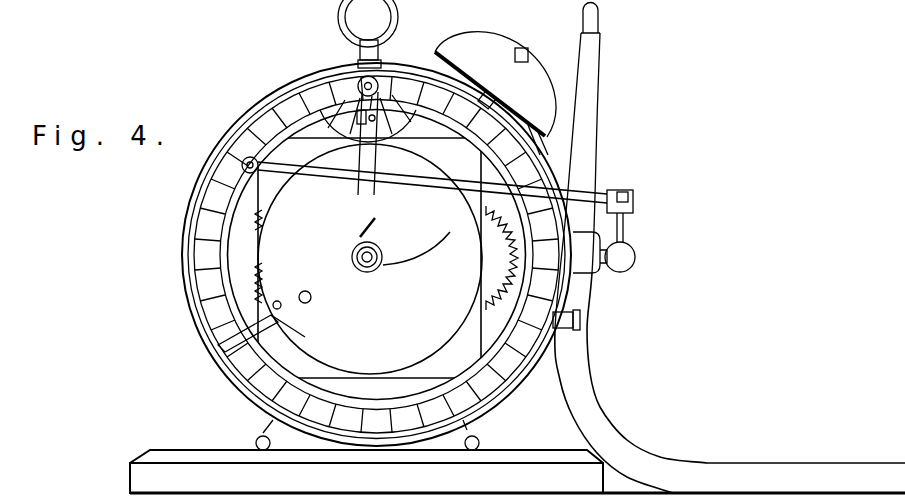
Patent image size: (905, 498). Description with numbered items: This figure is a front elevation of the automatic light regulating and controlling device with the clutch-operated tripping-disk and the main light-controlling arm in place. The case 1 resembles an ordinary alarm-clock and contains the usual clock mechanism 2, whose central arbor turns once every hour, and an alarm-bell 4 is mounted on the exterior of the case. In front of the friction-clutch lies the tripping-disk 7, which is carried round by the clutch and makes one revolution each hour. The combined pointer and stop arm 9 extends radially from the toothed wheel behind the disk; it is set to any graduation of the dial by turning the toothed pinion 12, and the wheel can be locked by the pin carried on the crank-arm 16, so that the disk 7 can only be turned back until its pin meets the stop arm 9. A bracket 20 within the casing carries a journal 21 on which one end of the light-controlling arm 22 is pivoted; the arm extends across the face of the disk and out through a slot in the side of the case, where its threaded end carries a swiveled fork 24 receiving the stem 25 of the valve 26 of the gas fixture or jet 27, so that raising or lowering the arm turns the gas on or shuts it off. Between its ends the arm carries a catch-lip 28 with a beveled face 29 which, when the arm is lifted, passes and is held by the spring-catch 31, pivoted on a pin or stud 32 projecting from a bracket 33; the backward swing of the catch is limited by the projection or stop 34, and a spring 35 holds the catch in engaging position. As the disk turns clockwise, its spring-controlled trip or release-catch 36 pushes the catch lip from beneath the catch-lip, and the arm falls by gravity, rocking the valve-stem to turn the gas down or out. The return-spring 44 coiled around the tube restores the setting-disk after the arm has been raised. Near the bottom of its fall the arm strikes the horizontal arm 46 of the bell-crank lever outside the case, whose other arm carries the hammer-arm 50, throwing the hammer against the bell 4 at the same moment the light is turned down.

The case 1 is at (186, 245).
The clock mechanism 2 is at (462, 353).
The alarm-bell 4 is at (483, 44).
The tripping-disk 7 is at (300, 340).
The combined pointer and stop arm 9 is at (290, 343).
The toothed pinion 12 is at (560, 157).
The crank-arm 16 is at (333, 23).
The bracket 20 is at (240, 165).
The journal 21 is at (200, 200).
The light-controlling arm 22 is at (350, 180).
The fork 24 is at (637, 195).
The stem 25 is at (625, 233).
The valve 26 is at (583, 270).
The gas fixture or jet 27 is at (593, 75).
The catch-lip 28 is at (383, 190).
The beveled face 29 is at (405, 142).
The spring-catch 31 is at (352, 86).
The pin or stud 32 is at (385, 70).
The bracket 33 is at (308, 100).
The projection or stop 34 is at (260, 120).
The spring 35 is at (398, 78).
The trip or release-catch 36 is at (255, 280).
The return-spring 44 is at (408, 265).
The arm of bell-crank lever 46 is at (557, 337).
The hammer-arm 50 is at (580, 267).